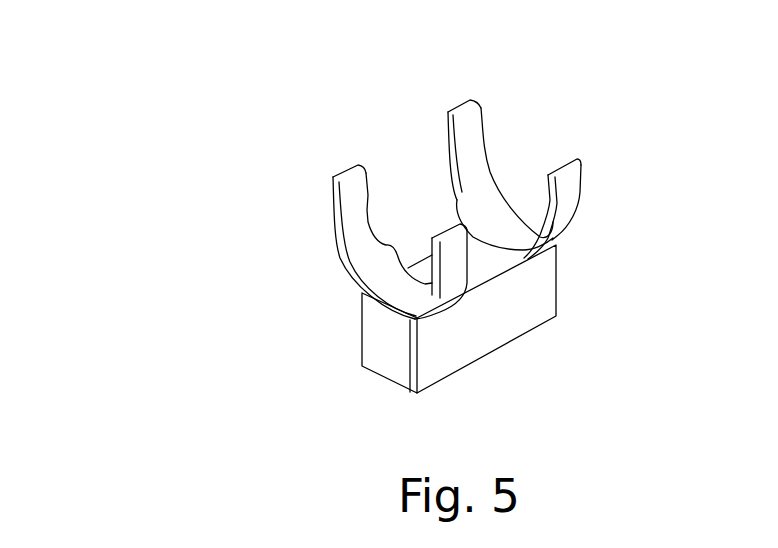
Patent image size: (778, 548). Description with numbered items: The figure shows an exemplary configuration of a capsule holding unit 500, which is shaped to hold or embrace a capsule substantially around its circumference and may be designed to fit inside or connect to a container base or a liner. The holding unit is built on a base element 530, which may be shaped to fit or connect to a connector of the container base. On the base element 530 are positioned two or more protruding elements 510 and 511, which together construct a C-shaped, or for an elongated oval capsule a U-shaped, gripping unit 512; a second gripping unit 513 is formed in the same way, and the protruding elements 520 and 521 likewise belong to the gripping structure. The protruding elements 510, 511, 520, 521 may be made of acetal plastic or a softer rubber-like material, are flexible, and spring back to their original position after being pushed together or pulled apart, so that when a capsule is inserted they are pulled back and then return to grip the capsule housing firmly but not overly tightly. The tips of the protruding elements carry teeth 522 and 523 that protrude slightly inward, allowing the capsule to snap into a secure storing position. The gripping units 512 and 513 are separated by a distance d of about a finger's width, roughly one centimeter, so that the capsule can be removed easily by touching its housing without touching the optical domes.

The capsule holding unit 500 is at (172, 145).
The protruding element 510 is at (338, 230).
The protruding element 511 is at (458, 257).
The gripping unit 512 is at (345, 152).
The gripping unit 513 is at (458, 97).
The protruding element 520 is at (450, 157).
The protruding element 521 is at (573, 190).
The tooth 522 is at (472, 120).
The tooth 523 is at (548, 175).
The base element 530 is at (542, 293).
The distance between gripping units d is at (453, 178).